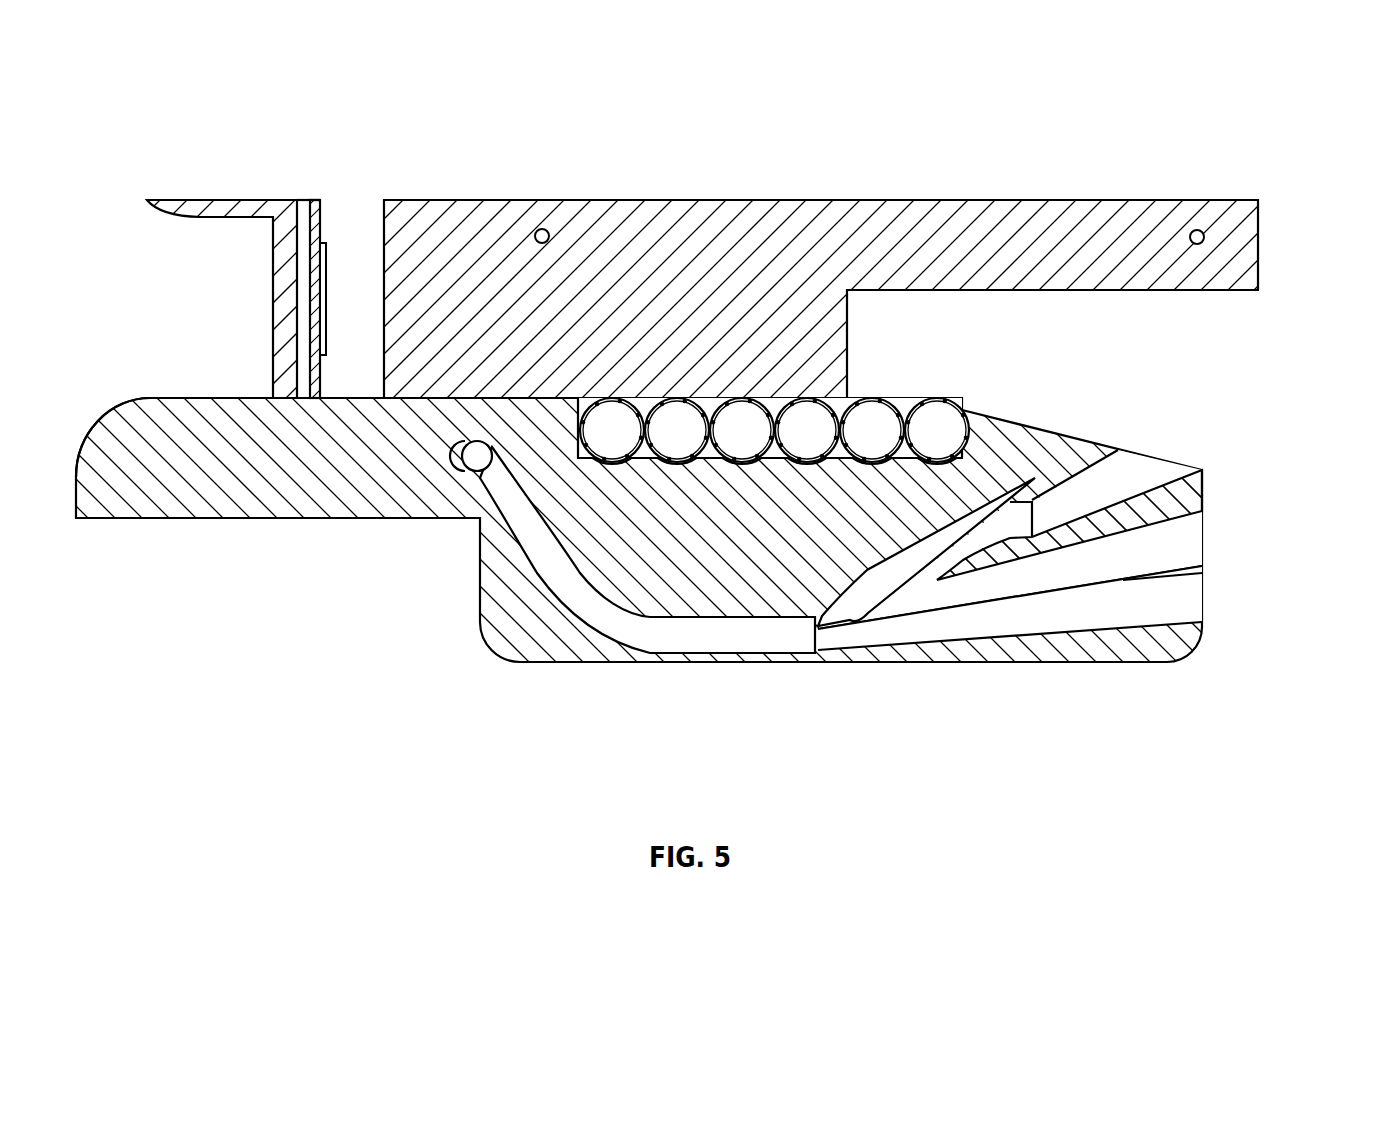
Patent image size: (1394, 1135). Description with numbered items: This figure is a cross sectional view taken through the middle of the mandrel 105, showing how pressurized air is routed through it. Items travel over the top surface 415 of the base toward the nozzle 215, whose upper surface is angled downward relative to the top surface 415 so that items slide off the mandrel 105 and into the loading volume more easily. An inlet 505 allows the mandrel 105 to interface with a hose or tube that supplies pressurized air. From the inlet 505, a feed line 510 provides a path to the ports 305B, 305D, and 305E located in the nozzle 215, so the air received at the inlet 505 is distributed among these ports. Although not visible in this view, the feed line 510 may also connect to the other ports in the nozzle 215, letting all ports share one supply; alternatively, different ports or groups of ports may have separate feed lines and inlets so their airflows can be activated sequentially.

The mandrel 105 is at (1056, 152).
The top surface 415 is at (196, 382).
The port 305B is at (1118, 449).
The port 305D is at (1203, 540).
The port 305E is at (1203, 597).
The inlet 505 is at (466, 462).
The feed line 510 is at (744, 642).
The nozzle 215 is at (1101, 673).